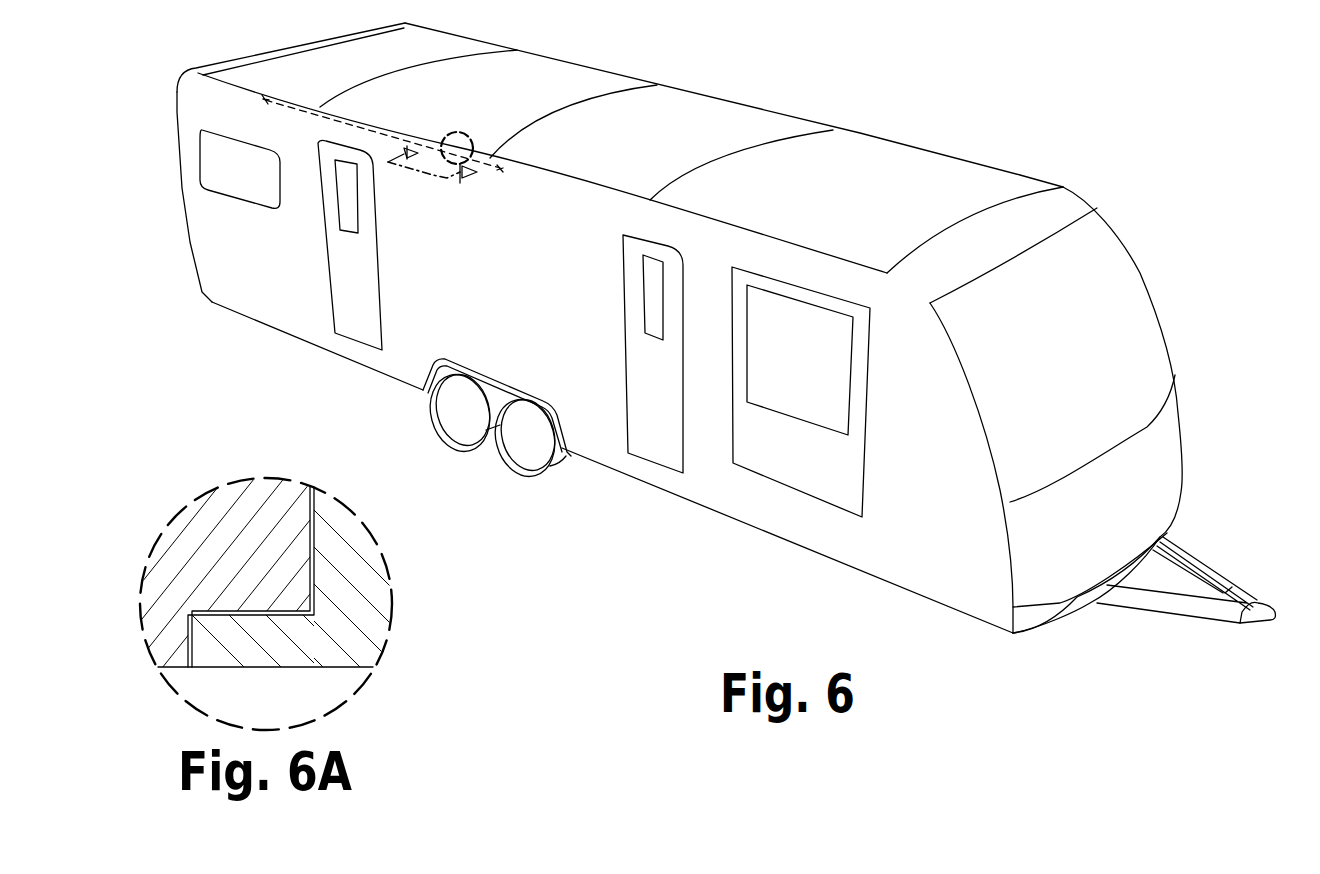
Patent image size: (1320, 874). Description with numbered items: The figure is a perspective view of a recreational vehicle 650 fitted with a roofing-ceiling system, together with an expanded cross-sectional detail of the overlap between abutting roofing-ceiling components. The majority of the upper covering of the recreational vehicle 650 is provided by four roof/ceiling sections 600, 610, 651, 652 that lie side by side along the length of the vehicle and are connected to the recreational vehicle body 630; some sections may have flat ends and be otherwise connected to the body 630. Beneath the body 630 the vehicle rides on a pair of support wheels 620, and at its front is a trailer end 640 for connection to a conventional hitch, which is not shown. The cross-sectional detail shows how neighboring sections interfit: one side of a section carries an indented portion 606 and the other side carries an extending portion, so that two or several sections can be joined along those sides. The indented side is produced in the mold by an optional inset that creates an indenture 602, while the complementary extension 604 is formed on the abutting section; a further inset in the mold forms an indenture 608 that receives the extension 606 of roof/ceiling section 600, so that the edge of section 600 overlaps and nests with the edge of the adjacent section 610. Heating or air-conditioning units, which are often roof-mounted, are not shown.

In FIG. 6, the roof/ceiling section 600 is at (486, 107).
In FIG. 6A, the roof/ceiling section 600 is at (322, 588).
In FIG. 6A, the indenture 602 is at (192, 637).
In FIG. 6A, the extension 604 is at (285, 646).
In FIG. 6A, the indented portion 606 is at (235, 522).
In FIG. 6A, the indenture 608 is at (310, 520).
In FIG. 6, the roof/ceiling section 610 is at (648, 143).
In FIG. 6A, the roof/ceiling section 610 is at (400, 604).
In FIG. 6, the support wheels 620 is at (476, 476).
In FIG. 6, the recreational vehicle body 630 is at (1112, 319).
In FIG. 6, the trailer end 640 is at (1193, 605).
In FIG. 6, the recreational vehicle 650 is at (1007, 106).
In FIG. 6, the roof/ceiling section 651 is at (357, 80).
In FIG. 6, the roof/ceiling section 652 is at (870, 202).